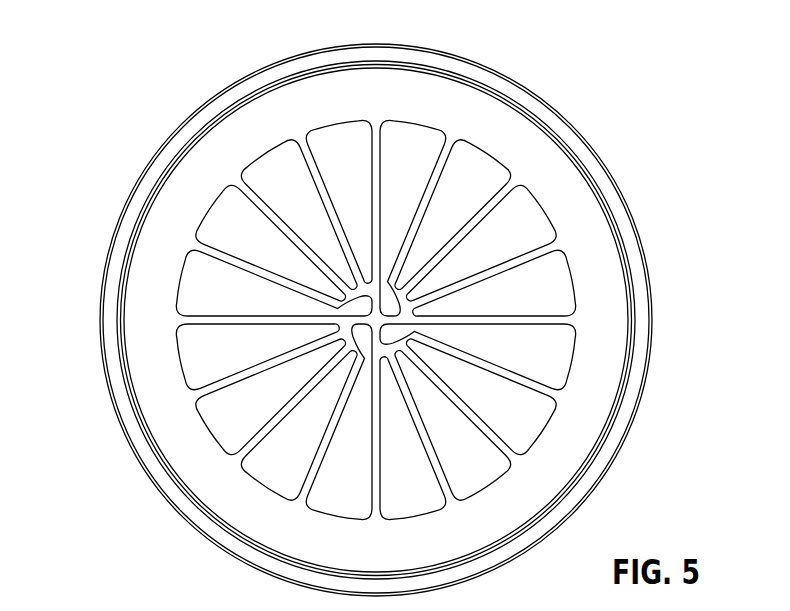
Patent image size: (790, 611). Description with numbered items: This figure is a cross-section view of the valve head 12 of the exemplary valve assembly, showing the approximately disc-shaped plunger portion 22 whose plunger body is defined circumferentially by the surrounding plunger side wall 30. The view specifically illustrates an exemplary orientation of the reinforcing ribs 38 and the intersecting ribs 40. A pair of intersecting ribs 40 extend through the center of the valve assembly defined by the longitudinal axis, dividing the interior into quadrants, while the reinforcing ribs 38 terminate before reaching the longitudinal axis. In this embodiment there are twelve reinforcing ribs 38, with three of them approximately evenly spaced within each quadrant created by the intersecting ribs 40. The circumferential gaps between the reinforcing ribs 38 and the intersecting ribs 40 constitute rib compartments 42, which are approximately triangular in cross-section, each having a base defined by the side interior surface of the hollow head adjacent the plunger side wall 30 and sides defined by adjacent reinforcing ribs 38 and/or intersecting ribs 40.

The valve head 12 is at (637, 137).
The plunger portion 22 is at (127, 188).
The plunger side wall 30 is at (641, 367).
The reinforcing ribs 38 is at (372, 155).
The intersecting ribs 40 is at (436, 187).
The rib compartments 42 is at (413, 147).